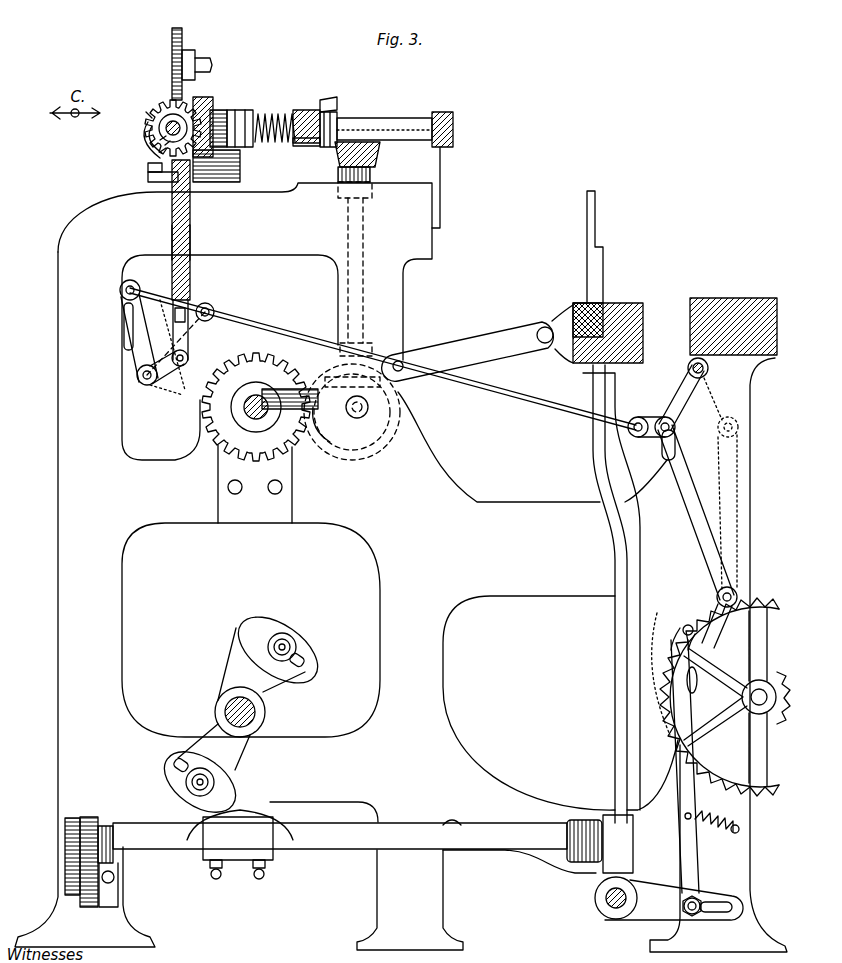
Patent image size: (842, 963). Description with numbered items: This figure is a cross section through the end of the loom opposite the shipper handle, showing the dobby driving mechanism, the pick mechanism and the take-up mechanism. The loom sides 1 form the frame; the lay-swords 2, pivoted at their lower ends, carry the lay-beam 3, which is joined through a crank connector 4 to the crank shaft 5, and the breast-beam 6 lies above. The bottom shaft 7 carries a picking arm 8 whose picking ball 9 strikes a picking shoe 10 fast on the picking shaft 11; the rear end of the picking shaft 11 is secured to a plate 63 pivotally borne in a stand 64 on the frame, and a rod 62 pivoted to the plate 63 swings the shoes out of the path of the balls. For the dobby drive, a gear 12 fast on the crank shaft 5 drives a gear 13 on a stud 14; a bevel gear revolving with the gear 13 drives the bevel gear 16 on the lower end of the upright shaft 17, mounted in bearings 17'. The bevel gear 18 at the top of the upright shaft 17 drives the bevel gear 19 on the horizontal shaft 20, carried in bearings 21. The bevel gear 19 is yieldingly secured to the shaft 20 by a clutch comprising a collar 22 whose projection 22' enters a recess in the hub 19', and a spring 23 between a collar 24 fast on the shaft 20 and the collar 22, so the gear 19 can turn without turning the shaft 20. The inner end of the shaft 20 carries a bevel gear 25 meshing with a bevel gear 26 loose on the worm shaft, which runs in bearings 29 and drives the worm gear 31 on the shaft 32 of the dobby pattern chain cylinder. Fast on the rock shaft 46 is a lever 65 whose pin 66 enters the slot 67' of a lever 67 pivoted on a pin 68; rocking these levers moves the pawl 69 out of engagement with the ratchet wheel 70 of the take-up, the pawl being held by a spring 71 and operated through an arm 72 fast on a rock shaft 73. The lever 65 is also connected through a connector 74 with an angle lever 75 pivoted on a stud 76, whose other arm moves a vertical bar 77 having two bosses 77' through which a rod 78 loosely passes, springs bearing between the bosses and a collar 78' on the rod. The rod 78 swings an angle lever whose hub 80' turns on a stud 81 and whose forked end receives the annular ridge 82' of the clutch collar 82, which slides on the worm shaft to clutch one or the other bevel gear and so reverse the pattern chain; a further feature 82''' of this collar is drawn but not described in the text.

The loom sides 1 is at (405, 315).
The lay-sword 2 is at (596, 450).
The lay-beam 3 is at (625, 303).
The crank connector 4 is at (500, 355).
The crank shaft 5 is at (318, 408).
The breast-beam 6 is at (720, 298).
The bottom shaft 7 is at (225, 705).
The picking arm 8 is at (245, 648).
The picking ball 9 is at (297, 638).
The picking shoe 10 is at (240, 810).
The picking shaft 11 is at (360, 840).
The gear 12 is at (232, 370).
The gear 13 is at (322, 372).
The stud 14 is at (368, 410).
The bevel gear 16 is at (402, 360).
The upright shaft 17 is at (374, 270).
The bearings 17' is at (376, 259).
The bevel gear 18 is at (340, 160).
The bevel gear 19 is at (342, 108).
The hub 19' is at (331, 91).
The horizontal shaft 20 is at (385, 128).
The bearings 21 is at (232, 117).
The clutch collar 22 is at (306, 116).
The projection 22' is at (299, 157).
The spring 23 is at (278, 140).
The collar 24 is at (255, 115).
The bevel gear 25 is at (205, 110).
The bevel gear 26 is at (170, 102).
The bearings 29 is at (188, 213).
The worm gear 31 is at (180, 42).
The shaft 32 is at (208, 63).
The rock shaft 46 is at (690, 365).
The rod 62 is at (116, 880).
The plate 63 is at (95, 815).
The stand 64 is at (70, 818).
The lever 65 is at (680, 395).
The pin 66 is at (660, 437).
The lever 67 is at (698, 489).
The slot 67' is at (655, 457).
The pin 68 is at (735, 595).
The pawl 69 is at (683, 630).
The ratchet wheel 70 is at (686, 725).
The spring 71 is at (712, 822).
The arm 72 is at (660, 913).
The rock shaft 73 is at (597, 900).
The connector 74 is at (275, 333).
The angle lever 75 is at (135, 323).
The stud 76 is at (140, 378).
The vertically moving bar 77 is at (200, 345).
The bosses 77' is at (184, 277).
The rod 78 is at (202, 324).
The collar 78' is at (202, 239).
The hub 80' is at (175, 182).
The stud 81 is at (155, 170).
The clutch collar 82 is at (132, 104).
The annular ridge 82' is at (132, 152).
The hub 82''' is at (116, 178).